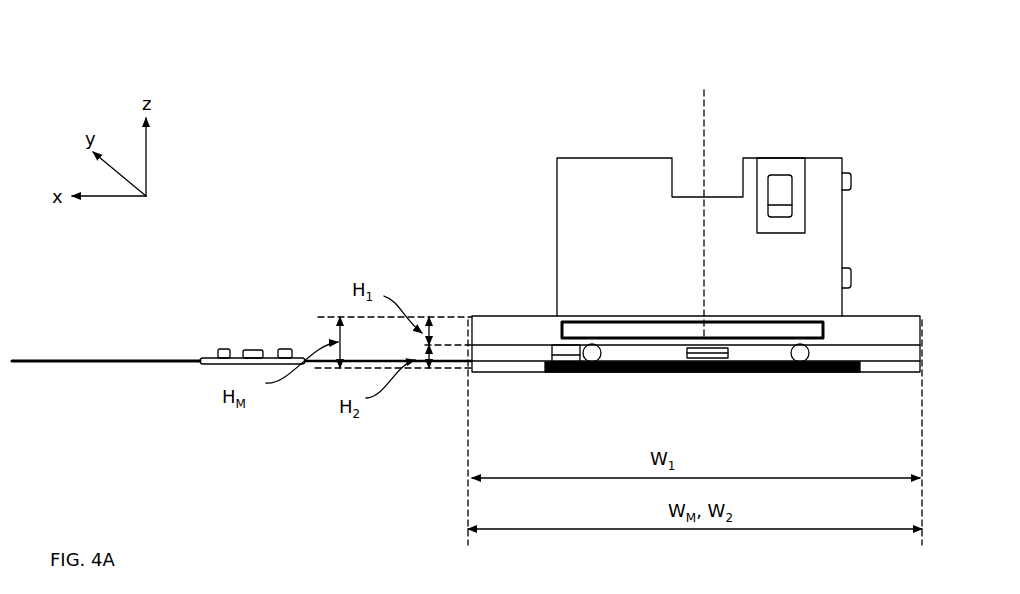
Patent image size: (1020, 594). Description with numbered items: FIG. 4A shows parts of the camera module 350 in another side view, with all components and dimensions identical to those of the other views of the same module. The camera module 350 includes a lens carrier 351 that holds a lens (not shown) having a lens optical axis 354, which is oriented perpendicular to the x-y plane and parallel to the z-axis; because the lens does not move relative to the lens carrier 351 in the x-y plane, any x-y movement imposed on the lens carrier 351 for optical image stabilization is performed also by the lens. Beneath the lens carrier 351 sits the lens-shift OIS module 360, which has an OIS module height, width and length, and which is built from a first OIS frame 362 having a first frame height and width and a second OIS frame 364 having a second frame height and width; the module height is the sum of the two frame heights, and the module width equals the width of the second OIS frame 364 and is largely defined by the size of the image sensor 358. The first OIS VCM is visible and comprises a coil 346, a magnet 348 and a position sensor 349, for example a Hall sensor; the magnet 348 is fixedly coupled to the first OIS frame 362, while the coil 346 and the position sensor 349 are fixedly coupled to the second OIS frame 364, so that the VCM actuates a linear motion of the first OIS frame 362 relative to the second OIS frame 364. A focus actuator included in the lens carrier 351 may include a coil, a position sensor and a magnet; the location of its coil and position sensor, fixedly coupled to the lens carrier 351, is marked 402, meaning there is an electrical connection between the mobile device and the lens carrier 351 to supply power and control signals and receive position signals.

The camera module 350 is at (602, 237).
The lens carrier 351 is at (555, 210).
The lens optical axis 354 is at (718, 118).
The position of the coil and the position sensor of the focus actuator 402 is at (850, 207).
The lens-shift OIS module 360 is at (675, 292).
The magnet 348 is at (622, 316).
The first OIS frame 362 is at (866, 328).
The second OIS frame 364 is at (900, 352).
The coil 346 is at (591, 364).
The position sensor 349 is at (710, 362).
The image sensor 358 is at (558, 377).